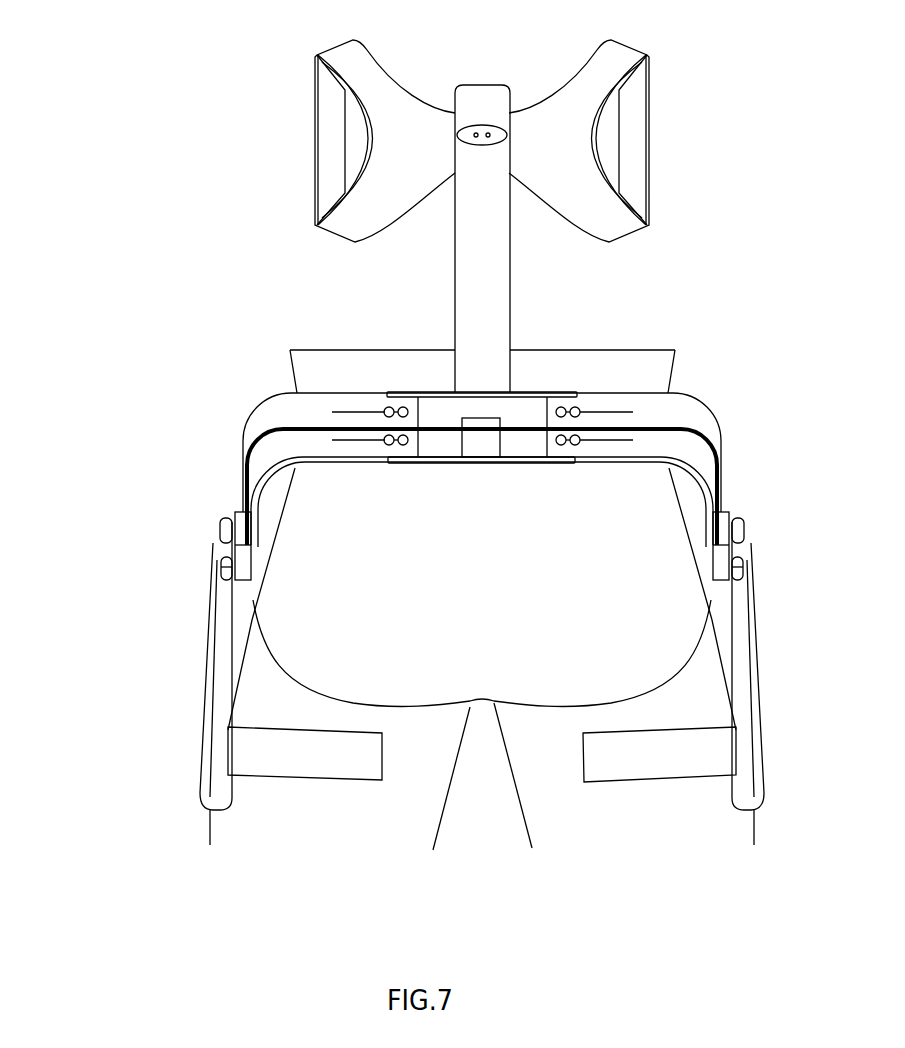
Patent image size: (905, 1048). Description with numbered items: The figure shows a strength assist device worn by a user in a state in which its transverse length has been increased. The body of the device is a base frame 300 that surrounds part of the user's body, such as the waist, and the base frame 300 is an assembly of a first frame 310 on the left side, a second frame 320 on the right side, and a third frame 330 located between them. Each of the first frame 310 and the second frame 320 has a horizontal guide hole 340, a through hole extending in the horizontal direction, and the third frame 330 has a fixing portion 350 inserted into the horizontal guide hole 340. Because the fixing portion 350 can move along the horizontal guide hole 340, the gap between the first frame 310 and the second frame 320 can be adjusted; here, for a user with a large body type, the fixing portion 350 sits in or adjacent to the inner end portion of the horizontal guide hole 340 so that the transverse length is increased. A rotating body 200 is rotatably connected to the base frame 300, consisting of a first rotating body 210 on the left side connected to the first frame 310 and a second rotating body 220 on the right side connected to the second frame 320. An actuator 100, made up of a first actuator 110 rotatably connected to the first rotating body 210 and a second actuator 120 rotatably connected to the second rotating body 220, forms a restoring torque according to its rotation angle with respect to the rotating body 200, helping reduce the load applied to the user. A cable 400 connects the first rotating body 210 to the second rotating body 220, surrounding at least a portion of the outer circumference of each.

The actuator 100 is at (437, 517).
The first actuator 110 is at (215, 685).
The second actuator 120 is at (752, 688).
The rotating body 200 is at (384, 434).
The first rotating body 210 is at (251, 565).
The second rotating body 220 is at (713, 565).
The base frame 300 is at (386, 280).
The first frame 310 is at (277, 413).
The second frame 320 is at (687, 413).
The third frame 330 is at (500, 270).
The horizontal guide hole 340 is at (343, 442).
The fixing portion 350 is at (403, 445).
The cable 400 is at (703, 440).